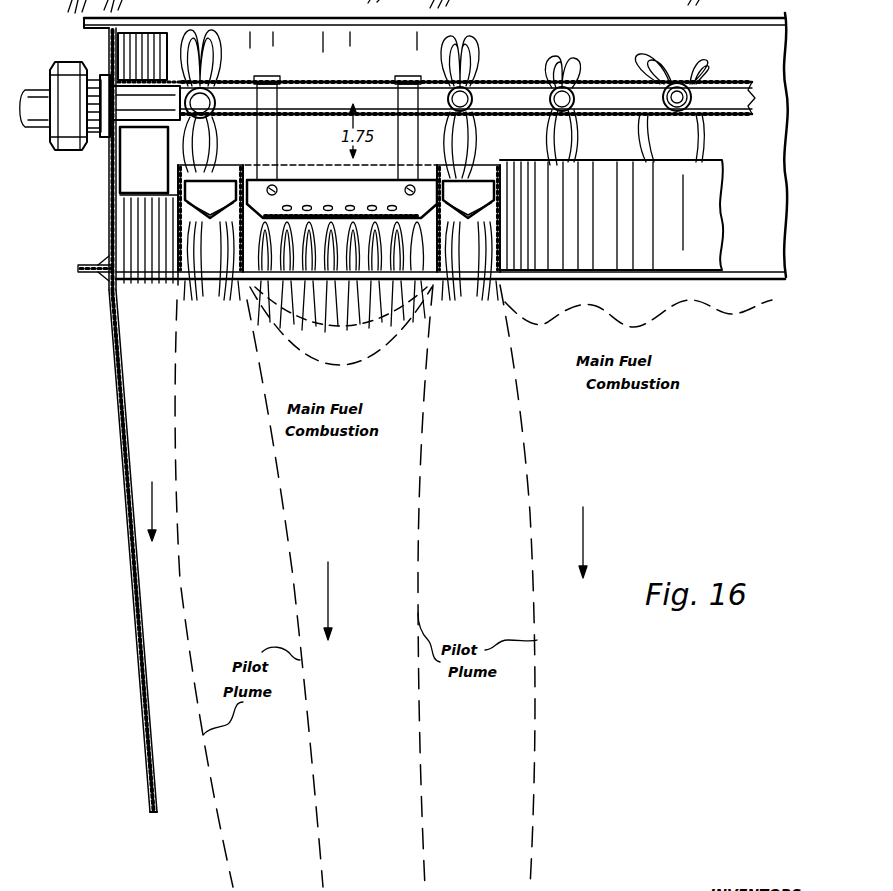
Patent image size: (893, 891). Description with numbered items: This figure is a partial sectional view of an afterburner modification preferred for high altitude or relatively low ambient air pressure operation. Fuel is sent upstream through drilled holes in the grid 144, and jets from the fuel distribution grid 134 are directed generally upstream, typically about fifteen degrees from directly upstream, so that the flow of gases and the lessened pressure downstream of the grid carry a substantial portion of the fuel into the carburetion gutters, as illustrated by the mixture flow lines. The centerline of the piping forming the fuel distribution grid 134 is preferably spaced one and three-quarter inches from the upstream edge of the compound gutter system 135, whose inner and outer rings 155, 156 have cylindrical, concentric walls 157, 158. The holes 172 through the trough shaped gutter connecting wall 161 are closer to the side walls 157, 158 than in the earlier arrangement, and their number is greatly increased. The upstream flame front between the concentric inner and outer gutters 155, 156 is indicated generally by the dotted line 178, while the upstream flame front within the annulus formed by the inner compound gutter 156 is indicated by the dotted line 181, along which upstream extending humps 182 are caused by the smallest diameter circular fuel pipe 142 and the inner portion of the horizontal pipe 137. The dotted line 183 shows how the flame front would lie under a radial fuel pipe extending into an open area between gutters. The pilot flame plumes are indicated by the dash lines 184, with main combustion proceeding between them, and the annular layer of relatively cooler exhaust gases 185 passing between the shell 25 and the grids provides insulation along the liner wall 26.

The shell 25 is at (110, 163).
The liner wall 26 is at (129, 547).
The fuel distribution grid 134 is at (430, 80).
The compound gutter system 135 is at (396, 223).
The horizontal pipe 137 is at (675, 114).
The smallest diameter circular fuel pipe 142 is at (563, 116).
The grid 144 is at (205, 88).
The inner ring 155 is at (182, 253).
The outer ring 156 is at (505, 228).
The wall 157 is at (180, 233).
The wall 158 is at (243, 239).
The trough shaped gutter connecting wall 161 is at (208, 215).
The holes 172 is at (372, 205).
The dotted line 178 is at (330, 367).
The dotted line 181 is at (545, 325).
The upstream extending humps 182 is at (688, 308).
The dotted line 183 is at (307, 323).
The dash lines 184 is at (293, 565).
The annular layer of relatively cooler exhaust gases 185 is at (130, 368).